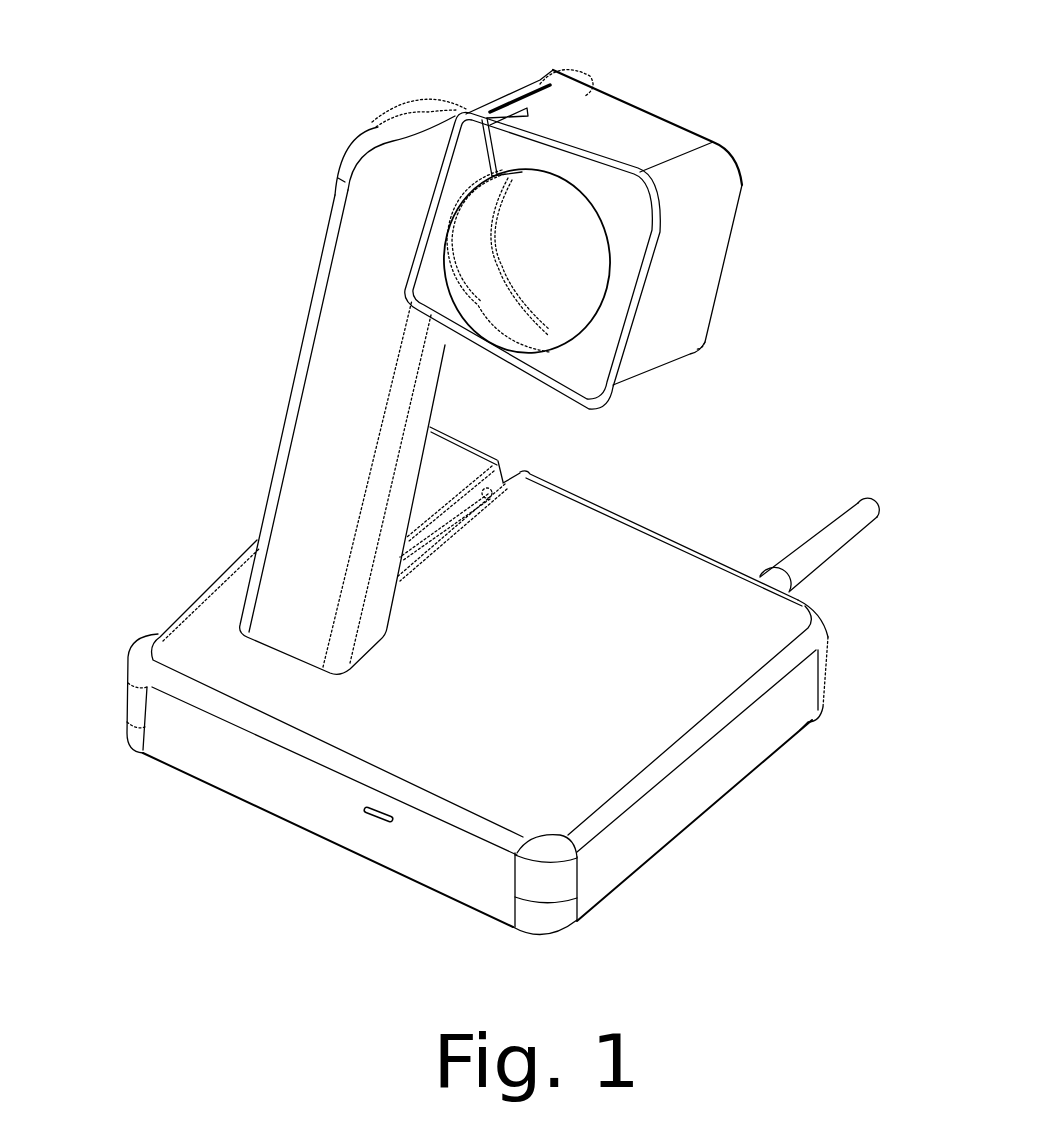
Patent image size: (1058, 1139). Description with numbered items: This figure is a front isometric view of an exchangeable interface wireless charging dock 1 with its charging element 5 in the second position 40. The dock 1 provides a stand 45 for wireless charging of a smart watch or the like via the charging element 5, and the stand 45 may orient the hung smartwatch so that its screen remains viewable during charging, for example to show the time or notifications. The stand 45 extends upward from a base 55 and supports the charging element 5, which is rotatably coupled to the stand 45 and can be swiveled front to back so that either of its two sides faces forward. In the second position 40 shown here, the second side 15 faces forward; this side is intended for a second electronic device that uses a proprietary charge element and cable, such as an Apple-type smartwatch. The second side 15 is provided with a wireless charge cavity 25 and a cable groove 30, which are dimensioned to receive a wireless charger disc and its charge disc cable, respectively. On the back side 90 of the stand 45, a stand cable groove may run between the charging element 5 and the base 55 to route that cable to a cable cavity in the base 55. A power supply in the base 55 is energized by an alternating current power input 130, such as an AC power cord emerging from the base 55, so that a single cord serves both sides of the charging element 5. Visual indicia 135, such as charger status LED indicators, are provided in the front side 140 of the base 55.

The exchangeable interface wireless charging dock 1 is at (727, 92).
The charging element 5 is at (683, 302).
The second side 15 is at (578, 373).
The wireless charge cavity 25 is at (543, 262).
The second position 40 is at (498, 261).
The cable groove 30 is at (567, 77).
The stand 45 is at (387, 181).
The base 55 is at (435, 697).
The back side 90 is at (643, 492).
The alternating current power input 130 is at (835, 560).
The visual indicia 135 is at (367, 812).
The front side 140 is at (207, 827).